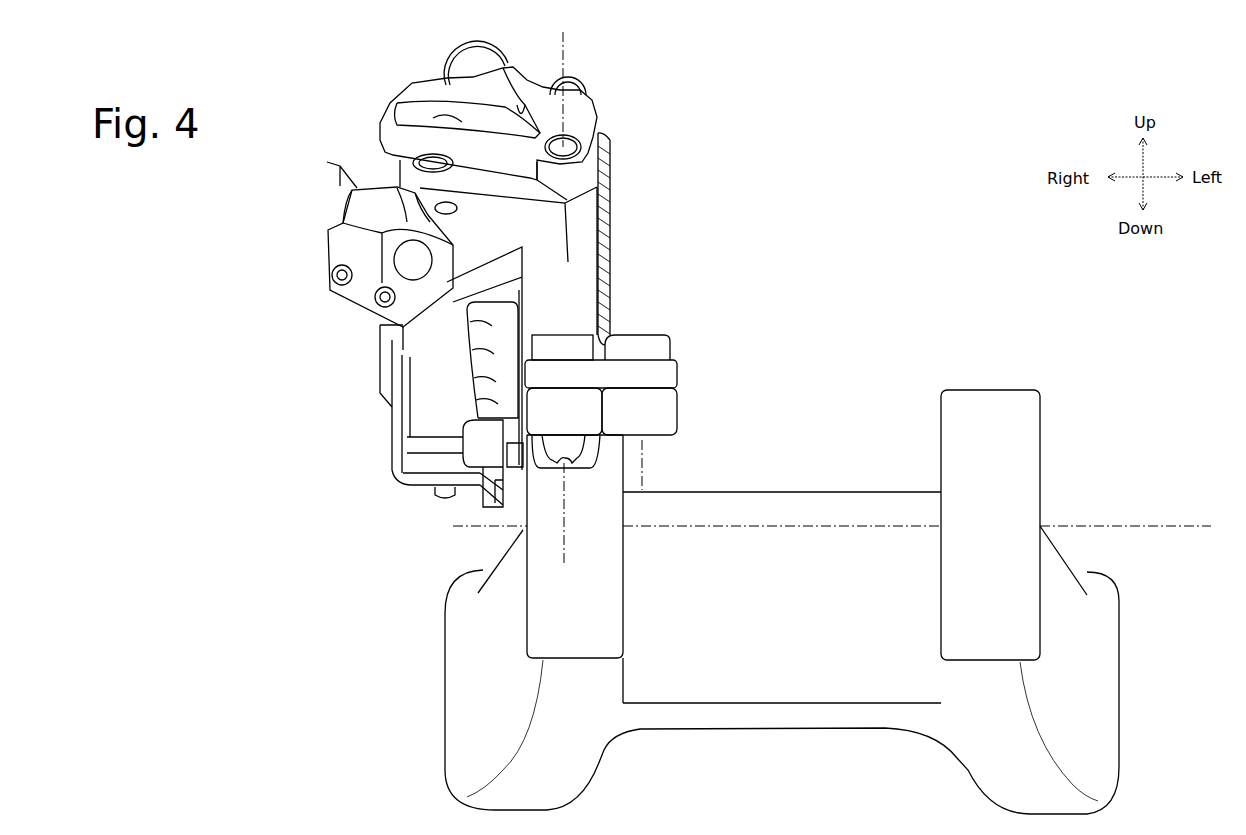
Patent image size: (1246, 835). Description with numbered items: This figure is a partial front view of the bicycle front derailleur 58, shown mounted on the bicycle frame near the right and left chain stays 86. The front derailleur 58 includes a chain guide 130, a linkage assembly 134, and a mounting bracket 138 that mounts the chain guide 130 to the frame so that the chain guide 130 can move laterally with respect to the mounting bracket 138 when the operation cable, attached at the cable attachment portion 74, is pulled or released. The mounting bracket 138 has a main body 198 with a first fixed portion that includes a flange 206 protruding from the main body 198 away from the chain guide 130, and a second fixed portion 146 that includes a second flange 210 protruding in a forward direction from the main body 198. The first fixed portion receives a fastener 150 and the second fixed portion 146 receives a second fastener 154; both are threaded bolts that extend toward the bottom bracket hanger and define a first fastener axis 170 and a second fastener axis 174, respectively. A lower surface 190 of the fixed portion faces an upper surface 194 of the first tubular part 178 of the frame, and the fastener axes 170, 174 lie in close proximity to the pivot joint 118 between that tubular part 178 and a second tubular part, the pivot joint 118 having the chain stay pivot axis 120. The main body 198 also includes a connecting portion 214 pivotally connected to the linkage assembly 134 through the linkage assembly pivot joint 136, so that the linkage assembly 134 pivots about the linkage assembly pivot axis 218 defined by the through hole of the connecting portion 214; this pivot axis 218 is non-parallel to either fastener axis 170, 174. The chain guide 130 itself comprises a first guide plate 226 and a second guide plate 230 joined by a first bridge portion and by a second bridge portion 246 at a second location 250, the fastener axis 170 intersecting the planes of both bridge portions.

The front derailleur 58 is at (810, 128).
The cable attachment portion 74 is at (457, 53).
The chain stays 86 is at (1103, 655).
The fourth pivot joint 118 is at (522, 610).
The chain stay pivot axis 120 is at (800, 527).
The chain guide 130 is at (380, 372).
The linkage assembly 134 is at (582, 117).
The linkage assembly pivot joint 136 is at (580, 147).
The mounting bracket 138 is at (587, 253).
The second fixed portion 146 is at (605, 332).
The fastener 150 is at (660, 342).
The second fastener 154 is at (573, 343).
The fastener axis 170 is at (645, 470).
The fastener axis 174 is at (567, 550).
The tubular part 178 is at (460, 618).
The lower surface 190 is at (647, 397).
The upper surface 194 is at (670, 392).
The main body 198 is at (372, 203).
The flange 206 is at (678, 375).
The second flange 210 is at (587, 375).
The connecting portion 214 is at (587, 208).
The linkage assembly pivot axis 218 is at (567, 65).
The first guide plate 226 is at (477, 370).
The second guide plate 230 is at (397, 427).
The second bridge portion 246 is at (427, 487).
The second location 250 is at (375, 478).